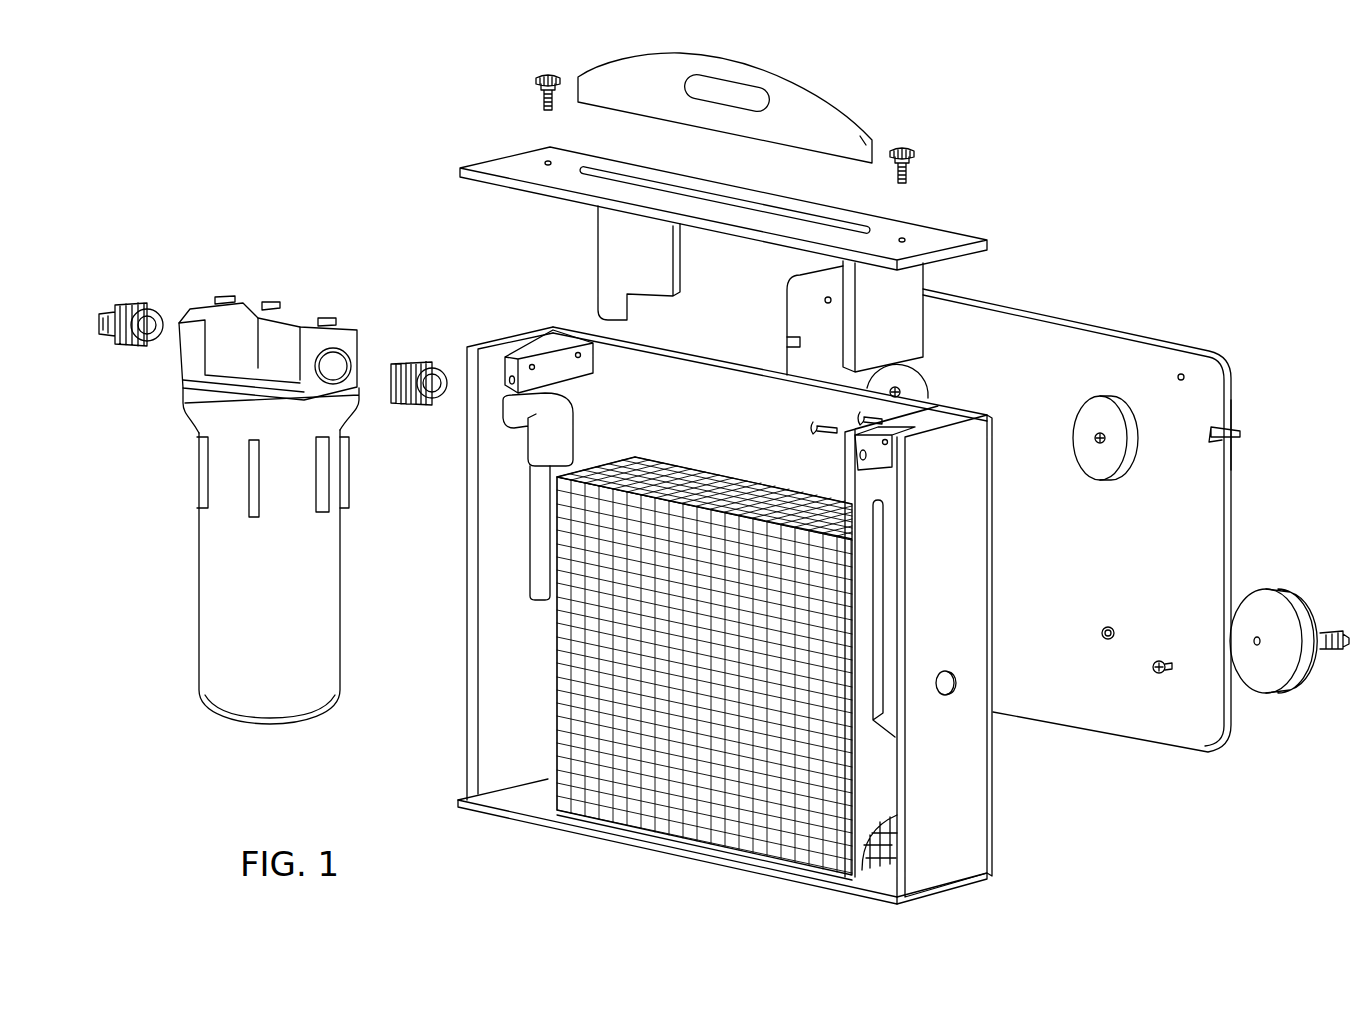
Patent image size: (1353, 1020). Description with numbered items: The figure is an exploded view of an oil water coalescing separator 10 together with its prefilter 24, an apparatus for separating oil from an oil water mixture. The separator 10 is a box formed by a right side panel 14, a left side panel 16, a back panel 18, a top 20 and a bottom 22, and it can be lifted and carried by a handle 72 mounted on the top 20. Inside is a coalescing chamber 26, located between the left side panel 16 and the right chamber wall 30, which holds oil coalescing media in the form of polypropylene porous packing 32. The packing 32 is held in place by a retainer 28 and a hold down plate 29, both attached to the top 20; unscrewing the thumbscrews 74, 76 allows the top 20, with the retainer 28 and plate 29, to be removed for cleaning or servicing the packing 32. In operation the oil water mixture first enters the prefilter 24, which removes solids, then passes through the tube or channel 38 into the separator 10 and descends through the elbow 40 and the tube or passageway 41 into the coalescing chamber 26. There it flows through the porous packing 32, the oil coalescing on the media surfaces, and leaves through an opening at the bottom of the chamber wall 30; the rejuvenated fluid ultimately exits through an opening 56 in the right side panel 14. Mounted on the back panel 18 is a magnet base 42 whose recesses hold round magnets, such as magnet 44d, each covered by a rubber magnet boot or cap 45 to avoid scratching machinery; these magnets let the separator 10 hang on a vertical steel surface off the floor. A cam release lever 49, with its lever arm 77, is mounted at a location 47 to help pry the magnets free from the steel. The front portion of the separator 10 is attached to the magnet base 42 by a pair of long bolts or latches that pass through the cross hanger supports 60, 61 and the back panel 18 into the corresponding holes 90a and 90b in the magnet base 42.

The oil water coalescing separator 10 is at (714, 832).
The right side panel 14 is at (973, 843).
The left side panel 16 is at (478, 736).
The back panel 18 is at (703, 358).
The top 20 is at (500, 163).
The bottom 22 is at (967, 886).
The prefilter 24 is at (258, 699).
The coalescing chamber 26 is at (497, 771).
The retainer 28 is at (598, 249).
The hold down plate 29 is at (920, 323).
The right chamber wall 30 is at (877, 787).
The porous packing 32 is at (672, 766).
The tube or channel 38 is at (418, 362).
The elbow 40 is at (576, 436).
The tube or passageway 41 is at (537, 553).
The magnet base 42 is at (1088, 340).
The round magnet 44d is at (1268, 689).
The rubber magnet boot or cap 45 is at (1289, 640).
The location 47 is at (794, 342).
The cam release lever 49 is at (1257, 431).
The opening 56 is at (947, 671).
The cross hanger support 60 is at (524, 352).
The cross hanger support 61 is at (937, 414).
The handle 72 is at (802, 86).
The thumbscrew 74 is at (534, 78).
The thumbscrew 76 is at (902, 150).
The lever arm 77 is at (1240, 438).
The hole 90a is at (824, 300).
The hole 90b is at (1183, 373).